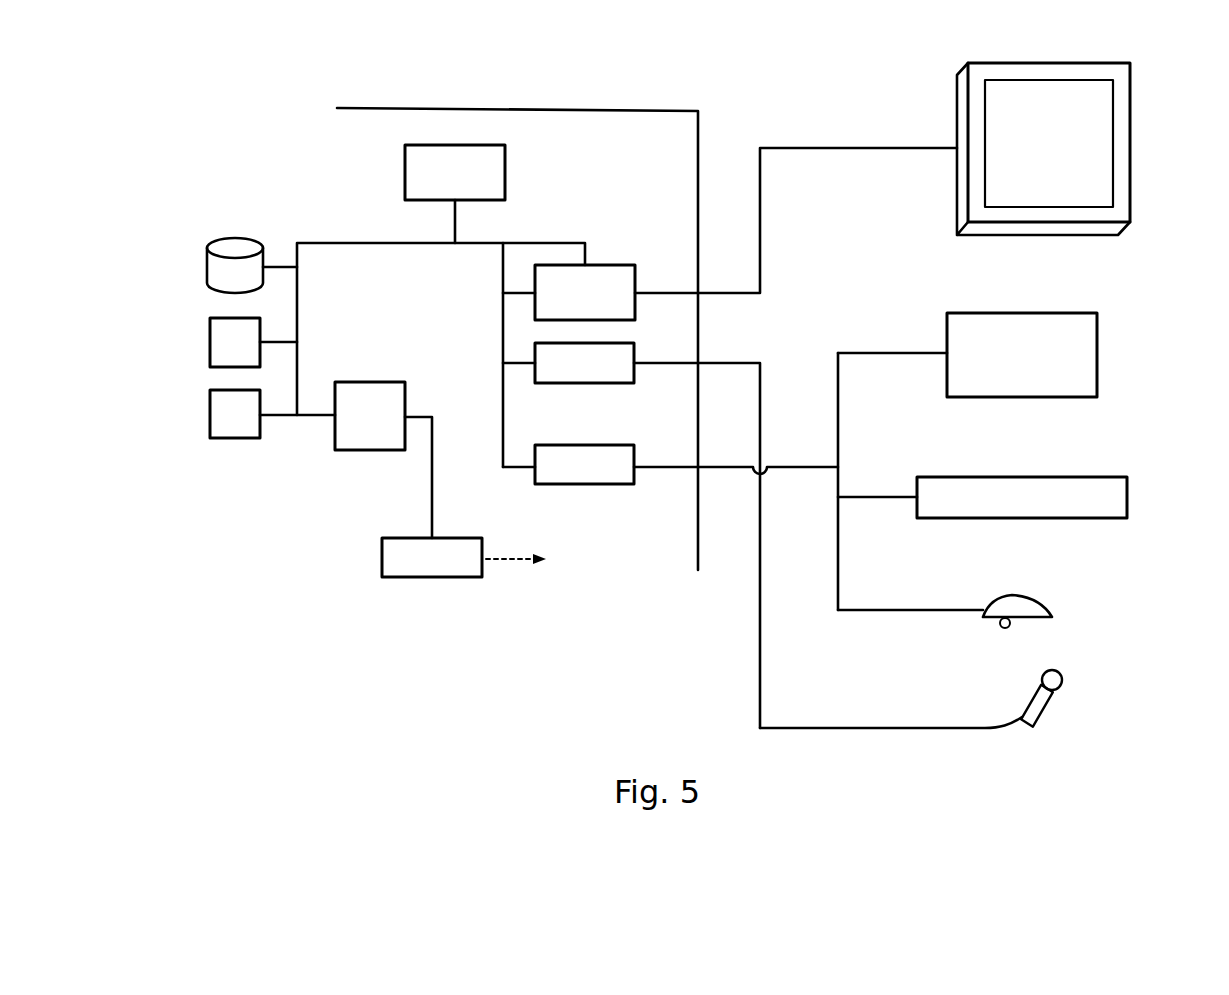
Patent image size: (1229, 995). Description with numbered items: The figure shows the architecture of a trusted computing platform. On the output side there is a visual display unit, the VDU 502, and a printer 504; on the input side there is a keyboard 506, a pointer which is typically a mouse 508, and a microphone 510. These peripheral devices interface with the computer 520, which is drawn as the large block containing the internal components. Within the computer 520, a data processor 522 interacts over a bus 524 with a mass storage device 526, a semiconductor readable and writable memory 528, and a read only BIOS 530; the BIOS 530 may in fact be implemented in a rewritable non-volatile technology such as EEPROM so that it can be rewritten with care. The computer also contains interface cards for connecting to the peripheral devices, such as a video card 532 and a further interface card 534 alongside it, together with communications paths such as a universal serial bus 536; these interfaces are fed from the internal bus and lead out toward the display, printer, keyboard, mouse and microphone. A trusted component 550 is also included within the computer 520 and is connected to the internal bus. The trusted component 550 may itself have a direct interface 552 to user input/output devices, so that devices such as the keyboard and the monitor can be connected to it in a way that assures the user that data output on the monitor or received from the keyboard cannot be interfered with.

The VDU 502 is at (1130, 148).
The printer 504 is at (1075, 313).
The keyboard 506 is at (1070, 477).
The mouse 508 is at (1030, 597).
The microphone 510 is at (1064, 682).
The computer 520 is at (473, 108).
The data processor 522 is at (405, 172).
The bus 524 is at (355, 243).
The mass storage device 526 is at (207, 267).
The semiconductor readable and writable memory 528 is at (210, 342).
The read only BIOS 530 is at (210, 415).
The video card 532 is at (600, 265).
The interface 534 is at (585, 384).
The universal serial bus 536 is at (585, 485).
The trusted component 550 is at (370, 451).
The direct interface 552 is at (432, 578).